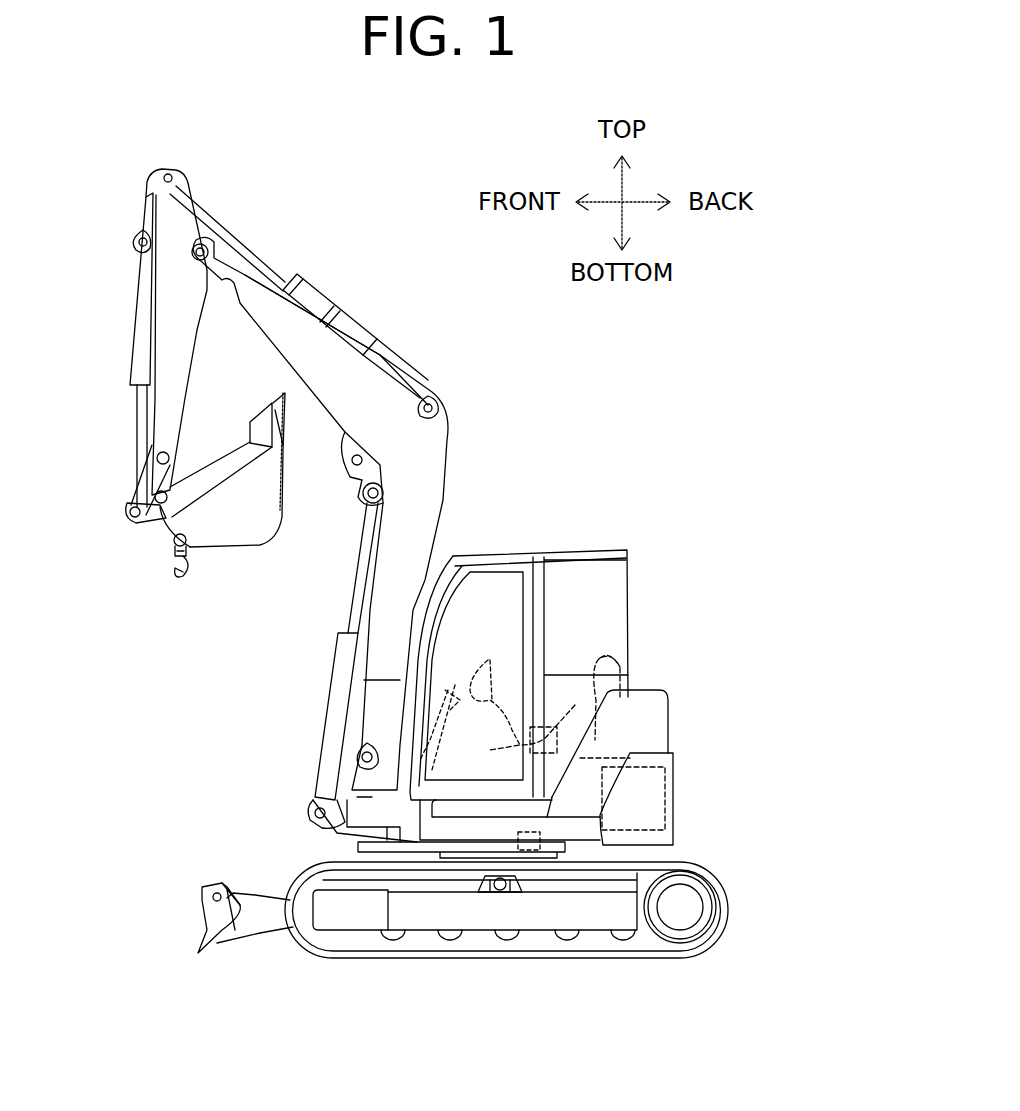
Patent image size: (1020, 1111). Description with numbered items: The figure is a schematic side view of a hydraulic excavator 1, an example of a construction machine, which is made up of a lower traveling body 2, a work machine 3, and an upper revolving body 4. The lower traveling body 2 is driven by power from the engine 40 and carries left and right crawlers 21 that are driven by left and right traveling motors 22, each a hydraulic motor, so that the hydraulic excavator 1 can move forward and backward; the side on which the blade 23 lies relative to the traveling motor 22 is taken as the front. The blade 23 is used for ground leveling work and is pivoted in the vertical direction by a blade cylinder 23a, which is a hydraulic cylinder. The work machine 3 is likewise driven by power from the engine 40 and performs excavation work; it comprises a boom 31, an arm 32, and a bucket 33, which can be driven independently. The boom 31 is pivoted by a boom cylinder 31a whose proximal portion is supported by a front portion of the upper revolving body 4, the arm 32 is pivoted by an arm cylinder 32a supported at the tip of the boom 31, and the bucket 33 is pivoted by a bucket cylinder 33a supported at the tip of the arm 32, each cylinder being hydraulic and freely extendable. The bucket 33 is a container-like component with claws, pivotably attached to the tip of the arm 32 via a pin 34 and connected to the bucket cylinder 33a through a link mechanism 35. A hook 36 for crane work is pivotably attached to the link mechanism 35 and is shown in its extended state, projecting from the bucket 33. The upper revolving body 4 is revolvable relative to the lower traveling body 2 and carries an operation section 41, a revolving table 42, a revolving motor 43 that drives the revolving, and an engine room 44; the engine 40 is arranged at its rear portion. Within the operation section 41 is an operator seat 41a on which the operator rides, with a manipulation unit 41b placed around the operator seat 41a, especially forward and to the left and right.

The hydraulic excavator 1 is at (618, 372).
The lower traveling body 2 is at (744, 888).
The crawler track 21 is at (723, 916).
The idler wheel 22 is at (678, 906).
The blade 23 is at (205, 890).
The blade arm 23a is at (290, 893).
The work implement 3 is at (404, 336).
The boom 31 is at (434, 497).
The boom cylinder 31a is at (332, 702).
The arm 32 is at (188, 362).
The arm cylinder 32a is at (347, 290).
The bucket 33 is at (257, 533).
The bucket cylinder 33a is at (140, 318).
The bucket link 34 is at (150, 484).
The bucket link 35 is at (133, 536).
The hook 36 is at (168, 600).
The upper slewing body 4 is at (684, 640).
The controller 40 is at (686, 806).
The cab 41 is at (548, 556).
The operation lever 41a is at (622, 667).
The operation levers 41b is at (448, 690).
The engine 42 is at (670, 760).
The slewing motor 43 is at (530, 842).
The engine hood 44 is at (672, 700).